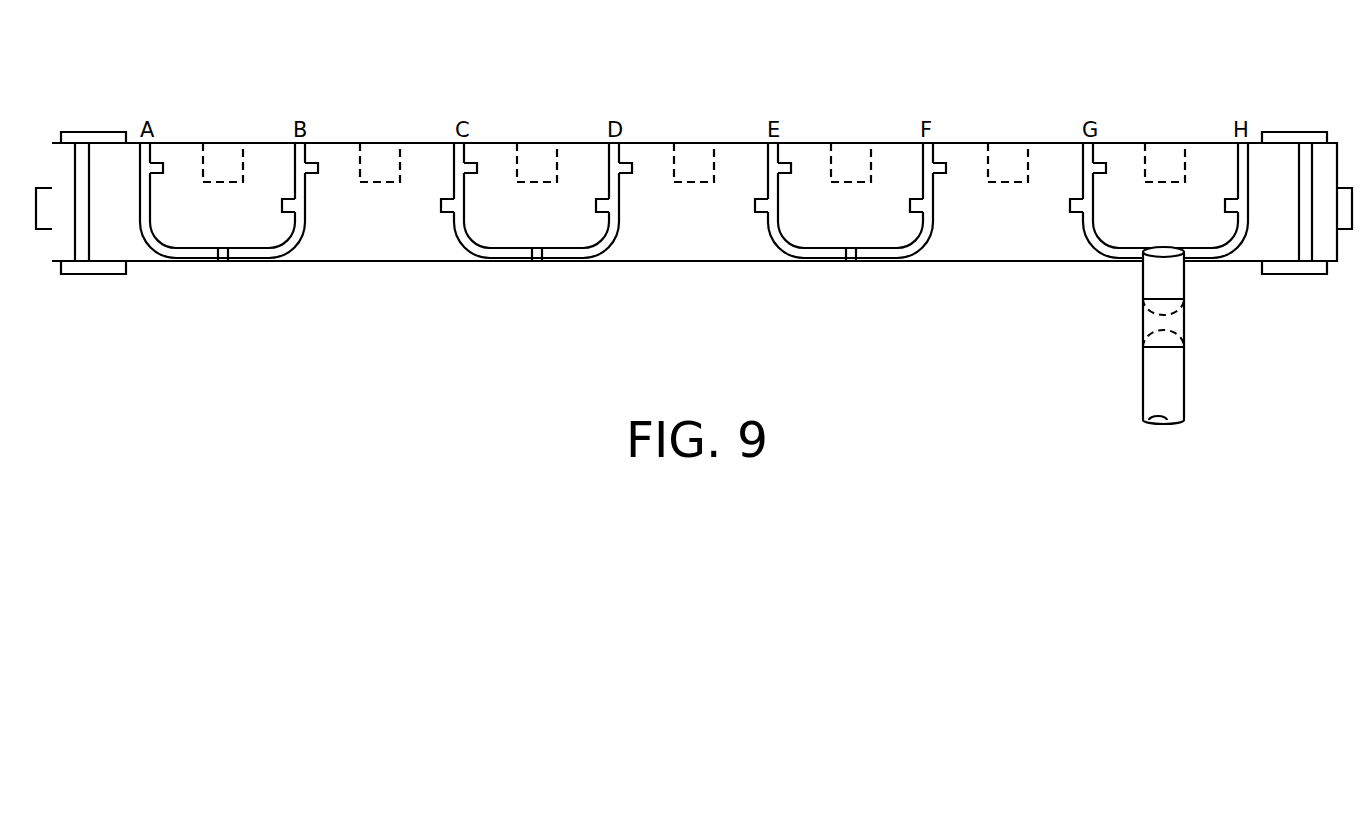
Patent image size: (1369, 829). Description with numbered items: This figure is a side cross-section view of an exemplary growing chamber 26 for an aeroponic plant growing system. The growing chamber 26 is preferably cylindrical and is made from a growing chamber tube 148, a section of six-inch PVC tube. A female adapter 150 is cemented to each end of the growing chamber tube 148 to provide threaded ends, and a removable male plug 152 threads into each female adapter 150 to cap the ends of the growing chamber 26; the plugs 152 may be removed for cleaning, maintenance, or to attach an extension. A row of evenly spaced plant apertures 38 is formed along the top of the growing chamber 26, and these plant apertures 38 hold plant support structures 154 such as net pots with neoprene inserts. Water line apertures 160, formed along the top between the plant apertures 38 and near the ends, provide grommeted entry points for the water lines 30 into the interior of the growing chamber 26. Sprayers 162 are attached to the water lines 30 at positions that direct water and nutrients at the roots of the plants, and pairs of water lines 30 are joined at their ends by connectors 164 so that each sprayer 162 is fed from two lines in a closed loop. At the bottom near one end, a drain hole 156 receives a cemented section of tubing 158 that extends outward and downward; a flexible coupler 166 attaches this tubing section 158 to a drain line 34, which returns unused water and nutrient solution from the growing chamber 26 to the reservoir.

The growing chamber 26 is at (355, 280).
The water lines 30 is at (298, 249).
The drain line 34 is at (1148, 367).
The plant apertures 38 is at (223, 143).
The growing chamber tube 148 is at (692, 143).
The female adapter 150 is at (87, 275).
The male plug 152 is at (50, 170).
The plant support structures 154 is at (380, 183).
The drain hole 156 is at (1158, 258).
The section of tubing 158 is at (1143, 290).
The water line apertures 160 is at (153, 150).
The sprayers 162 is at (153, 176).
The connectors 164 is at (222, 262).
The flexible coupler 166 is at (1188, 322).